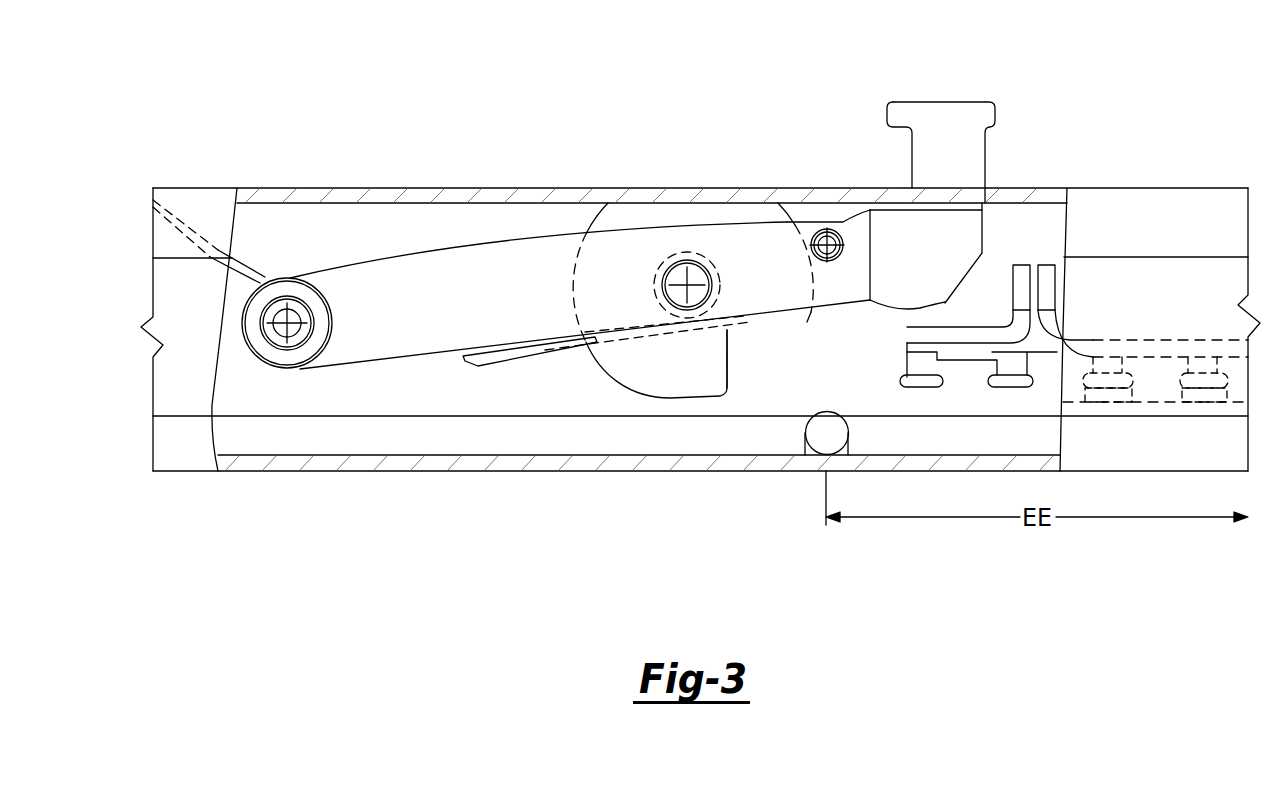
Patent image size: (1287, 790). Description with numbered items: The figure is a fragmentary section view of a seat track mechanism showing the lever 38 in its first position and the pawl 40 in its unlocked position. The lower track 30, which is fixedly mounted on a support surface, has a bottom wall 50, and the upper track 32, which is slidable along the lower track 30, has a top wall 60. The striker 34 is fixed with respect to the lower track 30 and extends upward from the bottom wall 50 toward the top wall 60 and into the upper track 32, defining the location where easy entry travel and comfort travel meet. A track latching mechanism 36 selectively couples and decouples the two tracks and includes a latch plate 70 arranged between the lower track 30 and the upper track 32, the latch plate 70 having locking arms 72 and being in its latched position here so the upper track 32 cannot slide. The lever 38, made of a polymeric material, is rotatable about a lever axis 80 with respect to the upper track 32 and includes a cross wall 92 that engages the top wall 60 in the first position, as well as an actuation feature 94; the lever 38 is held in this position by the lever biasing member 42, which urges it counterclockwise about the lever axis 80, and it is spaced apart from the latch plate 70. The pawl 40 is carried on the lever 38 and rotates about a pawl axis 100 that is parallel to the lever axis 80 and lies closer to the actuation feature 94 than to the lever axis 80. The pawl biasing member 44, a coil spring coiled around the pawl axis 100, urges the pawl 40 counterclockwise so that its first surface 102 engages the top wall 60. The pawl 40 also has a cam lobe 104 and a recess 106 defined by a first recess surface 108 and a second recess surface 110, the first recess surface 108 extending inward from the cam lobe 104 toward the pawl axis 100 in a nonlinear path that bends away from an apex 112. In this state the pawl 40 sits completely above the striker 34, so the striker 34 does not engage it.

The lower track 30 is at (210, 471).
The upper track 32 is at (187, 188).
The striker 34 is at (805, 430).
The track latching mechanism 36 is at (1030, 240).
The lever 38 is at (477, 282).
The pawl 40 is at (668, 379).
The lever biasing member 42 is at (248, 272).
The pawl biasing member 44 is at (515, 358).
The bottom wall 50 is at (370, 471).
The top wall 60 is at (478, 188).
The latch plate 70 is at (973, 327).
The locking arms 72 is at (917, 385).
The lever axis 80 is at (290, 323).
The cross wall 92 is at (905, 203).
The actuation feature 94 is at (963, 102).
The pawl axis 100 is at (683, 283).
The first surface 102 is at (748, 188).
The cam lobe 104 is at (598, 212).
The recess 106 is at (748, 333).
The first recess surface 108 is at (730, 355).
The second recess surface 110 is at (805, 312).
The apex 112 is at (728, 375).